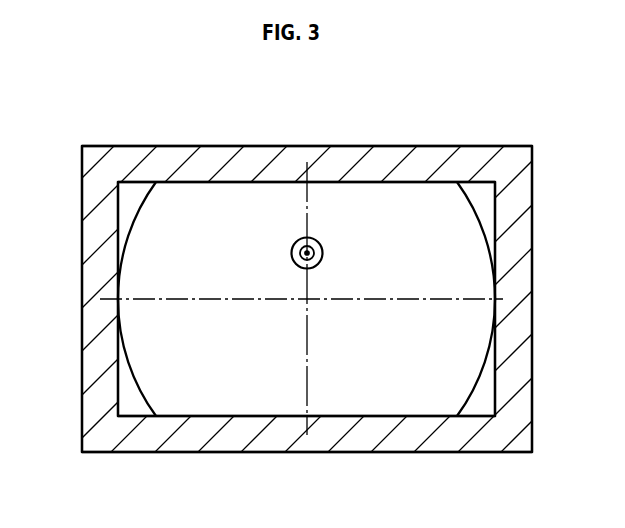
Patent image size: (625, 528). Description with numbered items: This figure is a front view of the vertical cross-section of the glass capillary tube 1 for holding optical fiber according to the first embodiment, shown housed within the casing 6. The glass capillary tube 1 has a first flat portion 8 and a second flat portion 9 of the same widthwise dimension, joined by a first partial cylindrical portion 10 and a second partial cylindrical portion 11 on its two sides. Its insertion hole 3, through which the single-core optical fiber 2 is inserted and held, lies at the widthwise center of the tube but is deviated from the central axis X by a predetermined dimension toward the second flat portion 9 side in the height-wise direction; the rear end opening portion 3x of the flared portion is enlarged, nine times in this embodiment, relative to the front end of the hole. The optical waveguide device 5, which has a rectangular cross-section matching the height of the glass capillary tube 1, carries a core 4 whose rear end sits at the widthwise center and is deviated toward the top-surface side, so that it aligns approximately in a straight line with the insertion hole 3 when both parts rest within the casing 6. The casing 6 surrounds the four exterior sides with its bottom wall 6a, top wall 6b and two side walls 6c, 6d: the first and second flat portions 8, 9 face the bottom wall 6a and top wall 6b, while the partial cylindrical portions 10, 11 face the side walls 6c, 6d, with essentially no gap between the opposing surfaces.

The glass capillary tube 1 is at (458, 266).
The single-core optical fiber 2 is at (273, 253).
The insertion hole 3 is at (291, 253).
The rear end opening portion 3x is at (322, 256).
The core 4 is at (316, 245).
The optical waveguide device 5 is at (489, 195).
The casing 6 is at (468, 144).
The bottom wall 6a is at (275, 443).
The top wall 6b is at (260, 162).
The side wall 6c is at (93, 281).
The side wall 6d is at (523, 318).
The first flat portion 8 is at (378, 418).
The second flat portion 9 is at (363, 181).
The first partial cylindrical portion 10 is at (133, 212).
The second partial cylindrical portion 11 is at (487, 375).
The central axis X is at (310, 300).